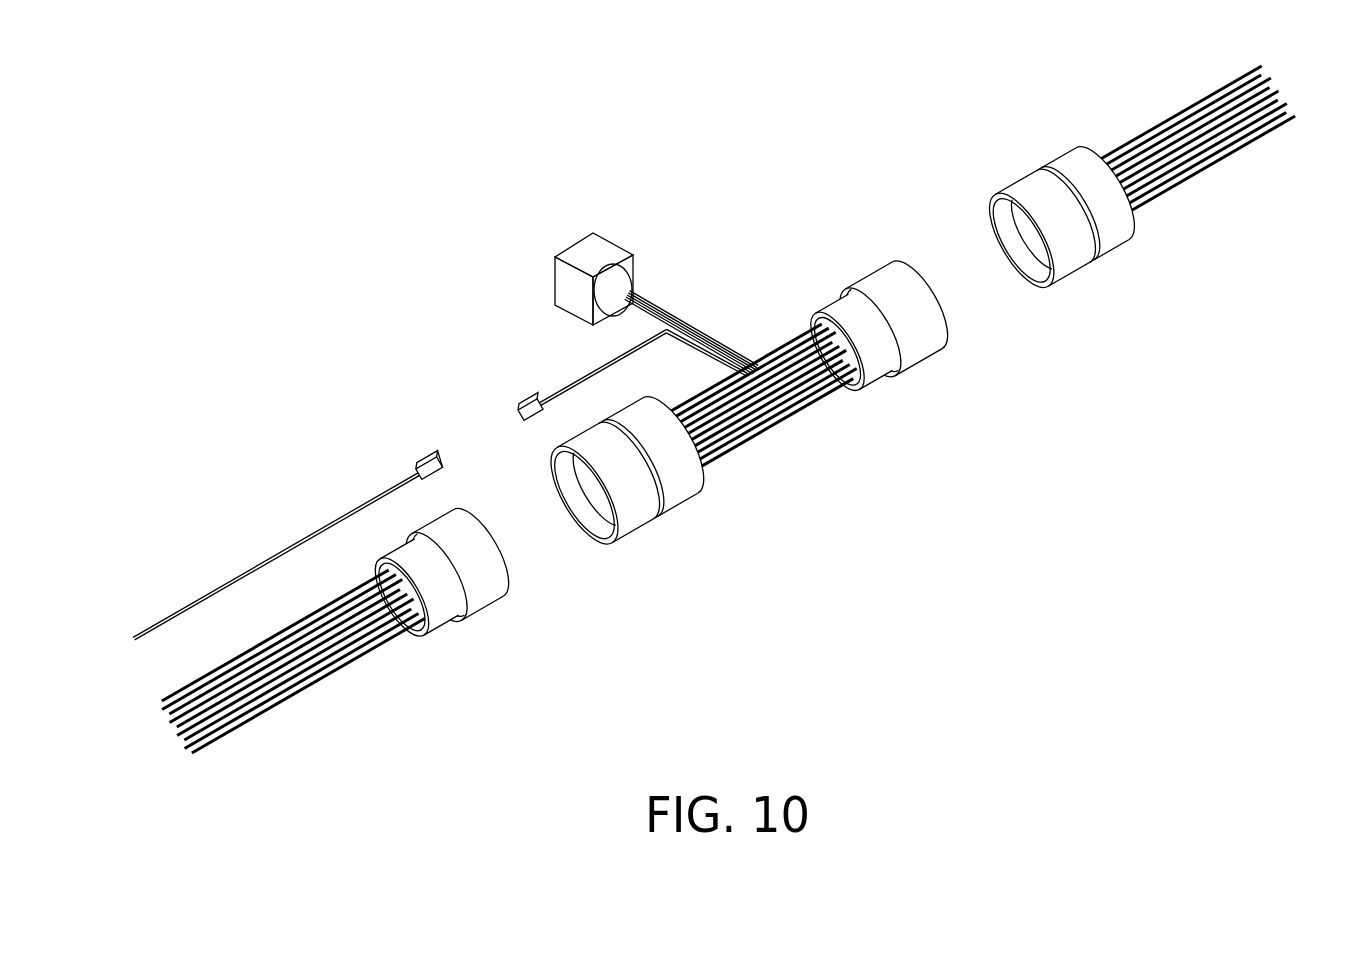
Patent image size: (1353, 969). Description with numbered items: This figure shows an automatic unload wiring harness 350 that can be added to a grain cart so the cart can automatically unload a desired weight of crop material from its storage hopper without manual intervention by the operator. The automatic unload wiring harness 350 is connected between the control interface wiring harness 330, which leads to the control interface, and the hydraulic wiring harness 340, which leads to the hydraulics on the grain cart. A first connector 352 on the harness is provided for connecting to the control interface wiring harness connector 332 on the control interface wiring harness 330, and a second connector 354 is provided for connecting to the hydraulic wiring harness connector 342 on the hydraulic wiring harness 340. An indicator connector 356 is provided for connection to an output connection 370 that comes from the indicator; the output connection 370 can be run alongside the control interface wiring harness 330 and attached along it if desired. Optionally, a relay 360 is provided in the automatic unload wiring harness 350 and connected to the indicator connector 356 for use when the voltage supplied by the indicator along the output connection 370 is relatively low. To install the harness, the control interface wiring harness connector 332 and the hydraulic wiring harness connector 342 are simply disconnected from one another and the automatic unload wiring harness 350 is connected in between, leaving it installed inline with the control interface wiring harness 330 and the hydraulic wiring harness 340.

The control interface wiring harness 330 is at (330, 670).
The control interface wiring harness connector 332 is at (486, 612).
The hydraulic wiring harness 340 is at (1240, 160).
The hydraulic wiring harness connector 342 is at (1085, 262).
The automatic unload wiring harness 350 is at (865, 492).
The first connector 352 is at (628, 492).
The second connector 354 is at (945, 335).
The indicator connector 356 is at (548, 392).
The relay 360 is at (612, 242).
The output connection 370 is at (352, 503).